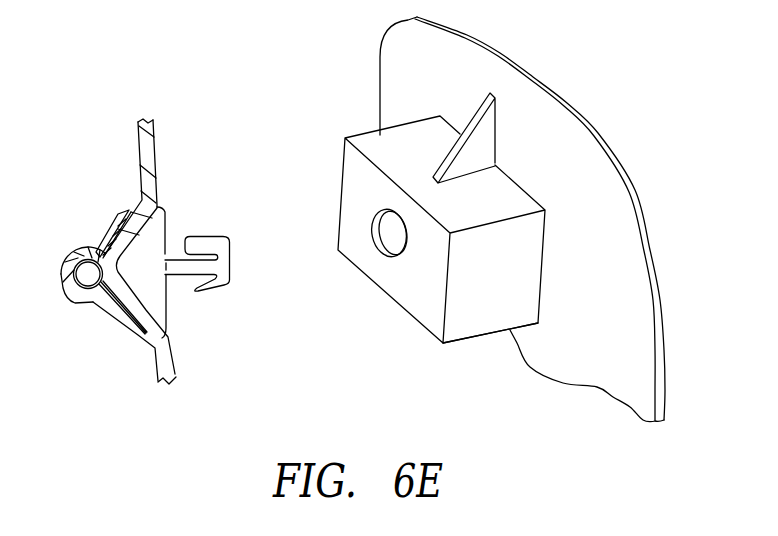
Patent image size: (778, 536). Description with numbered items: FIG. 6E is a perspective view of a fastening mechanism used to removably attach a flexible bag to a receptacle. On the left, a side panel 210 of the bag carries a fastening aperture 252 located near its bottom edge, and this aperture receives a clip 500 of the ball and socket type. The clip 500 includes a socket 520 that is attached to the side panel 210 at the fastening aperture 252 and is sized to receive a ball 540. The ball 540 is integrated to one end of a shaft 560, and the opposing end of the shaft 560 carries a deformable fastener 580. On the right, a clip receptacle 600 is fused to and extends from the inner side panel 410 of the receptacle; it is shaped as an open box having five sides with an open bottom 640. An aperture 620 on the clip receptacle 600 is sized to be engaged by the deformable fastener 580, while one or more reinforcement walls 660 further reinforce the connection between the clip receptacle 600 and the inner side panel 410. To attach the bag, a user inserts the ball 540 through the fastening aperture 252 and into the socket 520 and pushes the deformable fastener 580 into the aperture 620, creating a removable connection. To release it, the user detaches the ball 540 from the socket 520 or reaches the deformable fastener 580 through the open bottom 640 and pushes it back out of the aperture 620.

The side panel 210 is at (158, 153).
The fastening aperture 252 is at (101, 246).
The inner side panel 410 is at (597, 238).
The clip 500 is at (163, 273).
The socket 520 is at (116, 229).
The ball 540 is at (98, 292).
The shaft 560 is at (177, 267).
The deformable fastener 580 is at (224, 260).
The clip receptacle 600 is at (425, 236).
The aperture 620 is at (392, 243).
The open bottom 640 is at (493, 335).
The reinforcement wall 660 is at (487, 135).